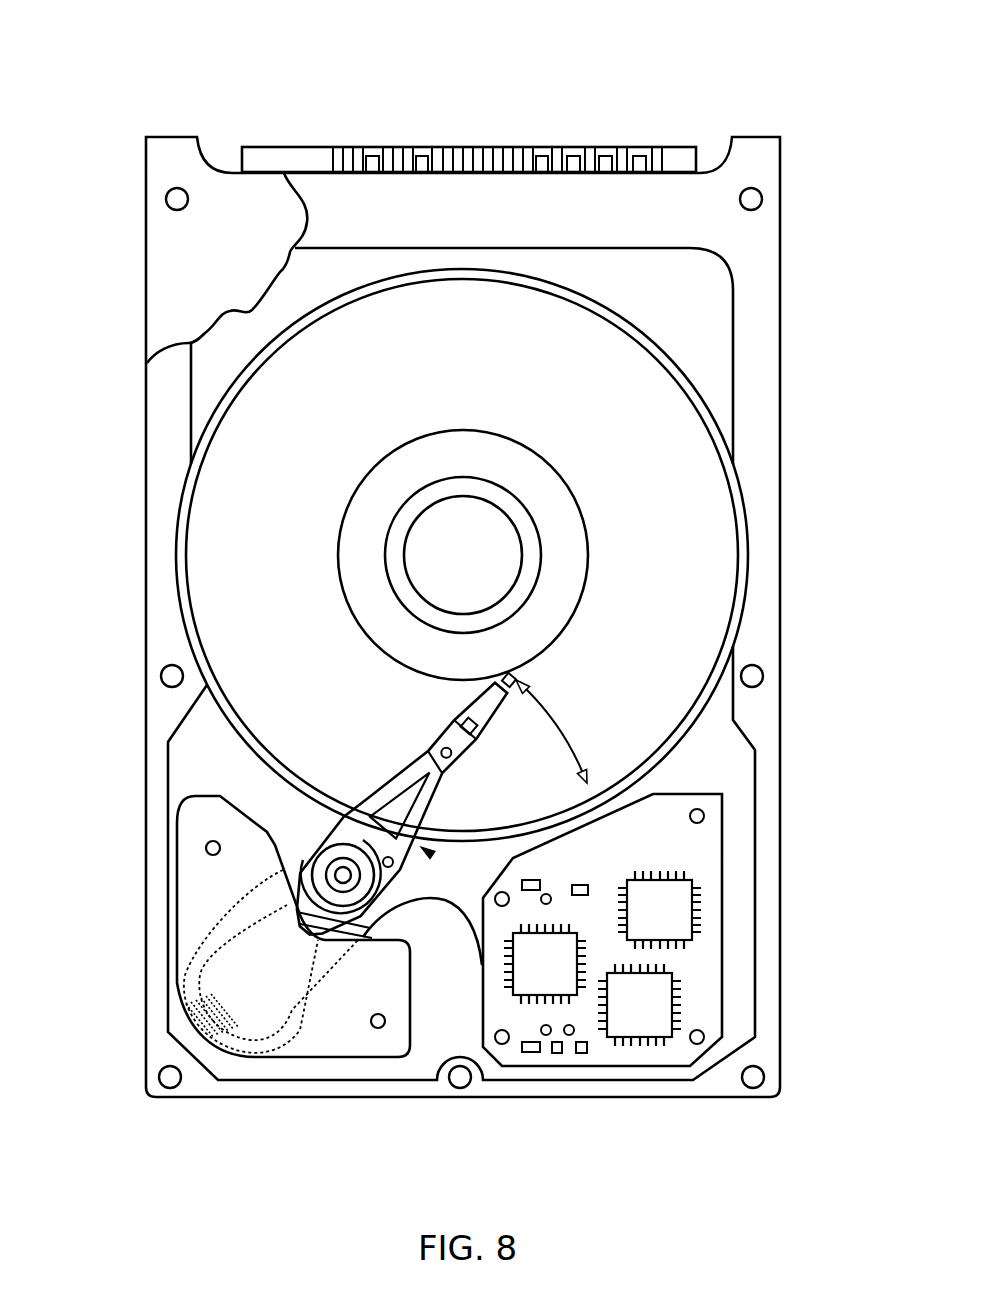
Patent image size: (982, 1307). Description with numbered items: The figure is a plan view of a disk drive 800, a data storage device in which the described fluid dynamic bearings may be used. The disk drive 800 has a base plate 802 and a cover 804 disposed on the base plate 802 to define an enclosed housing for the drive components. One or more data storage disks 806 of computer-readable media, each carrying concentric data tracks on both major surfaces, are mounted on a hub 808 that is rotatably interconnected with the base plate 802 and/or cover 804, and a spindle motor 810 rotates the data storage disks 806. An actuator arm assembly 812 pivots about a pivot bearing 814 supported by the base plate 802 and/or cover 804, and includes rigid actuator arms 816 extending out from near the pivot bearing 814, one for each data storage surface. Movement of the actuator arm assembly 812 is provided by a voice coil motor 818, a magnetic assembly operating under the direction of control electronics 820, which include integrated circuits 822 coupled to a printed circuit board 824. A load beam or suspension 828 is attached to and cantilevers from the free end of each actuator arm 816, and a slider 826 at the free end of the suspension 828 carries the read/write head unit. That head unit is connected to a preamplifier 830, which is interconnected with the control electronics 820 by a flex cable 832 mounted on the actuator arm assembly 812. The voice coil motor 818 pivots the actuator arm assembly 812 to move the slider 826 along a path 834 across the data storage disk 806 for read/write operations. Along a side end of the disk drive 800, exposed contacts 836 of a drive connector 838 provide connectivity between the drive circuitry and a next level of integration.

The disk drive 800 is at (146, 53).
The base plate 802 is at (167, 630).
The cover 804 is at (227, 268).
The data storage disk 806 is at (305, 435).
The hub 808 is at (350, 505).
The spindle motor 810 is at (437, 571).
The actuator arm assembly 812 is at (437, 858).
The pivot bearing 814 is at (320, 877).
The actuator arm 816 is at (347, 826).
The voice coil motor 818 is at (168, 973).
The control electronics 820 is at (732, 1107).
The integrated circuit 822 is at (665, 907).
The printed circuit board 824 is at (693, 972).
The slider 826 is at (513, 667).
The suspension 828 is at (467, 718).
The preamplifier 830 is at (400, 885).
The flex cable 832 is at (395, 880).
The path 834 is at (565, 730).
The exposed contacts 836 is at (657, 148).
The drive connector 838 is at (252, 155).